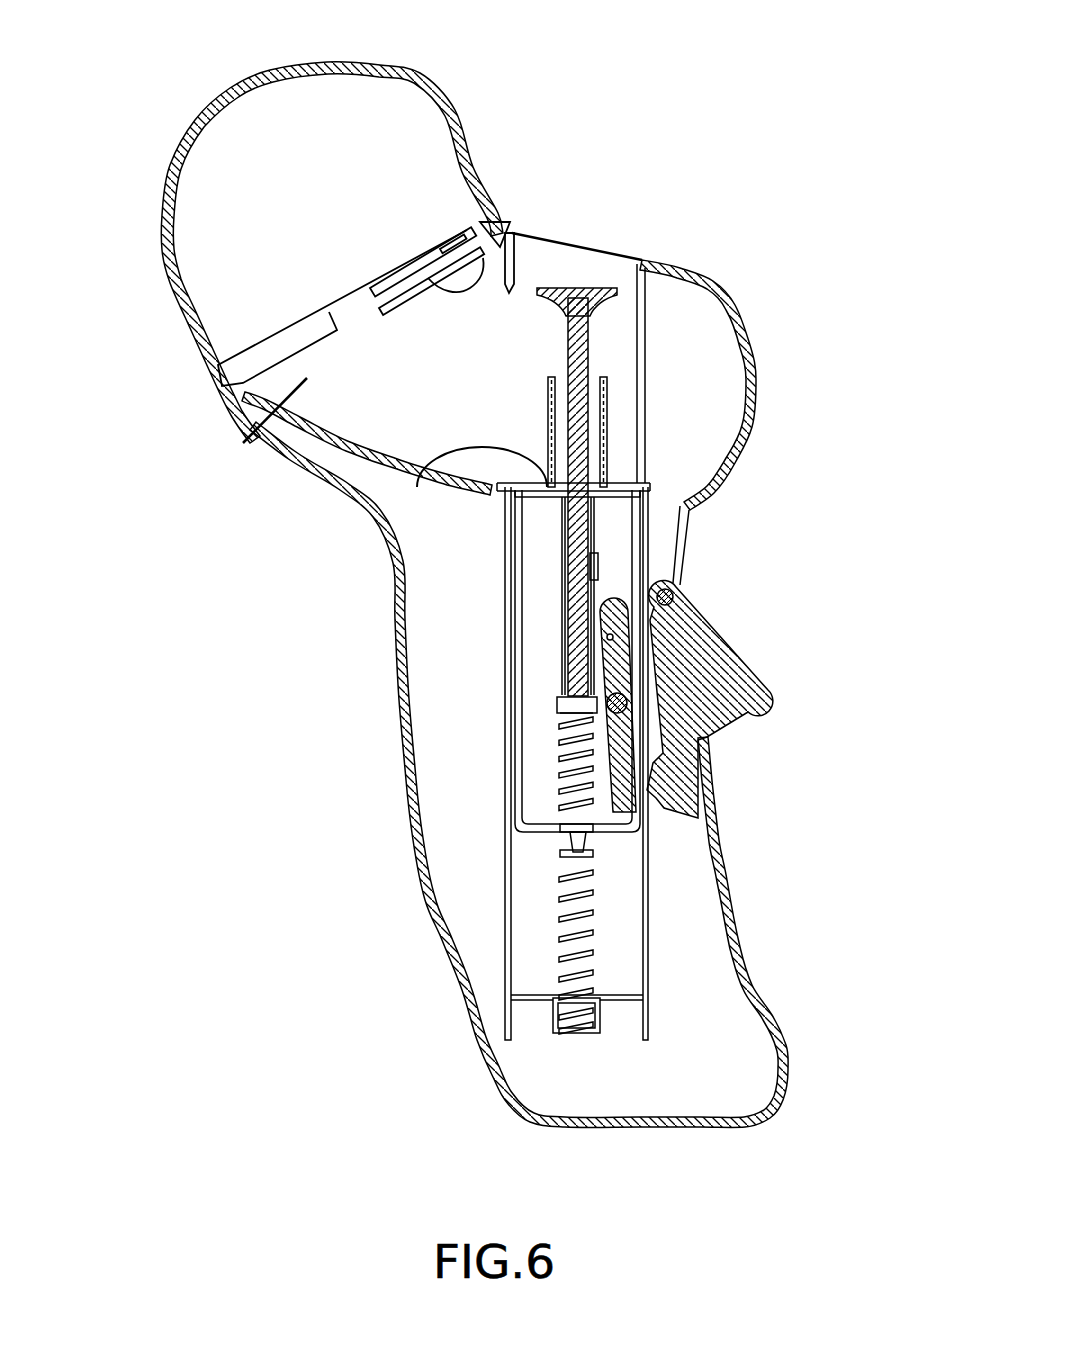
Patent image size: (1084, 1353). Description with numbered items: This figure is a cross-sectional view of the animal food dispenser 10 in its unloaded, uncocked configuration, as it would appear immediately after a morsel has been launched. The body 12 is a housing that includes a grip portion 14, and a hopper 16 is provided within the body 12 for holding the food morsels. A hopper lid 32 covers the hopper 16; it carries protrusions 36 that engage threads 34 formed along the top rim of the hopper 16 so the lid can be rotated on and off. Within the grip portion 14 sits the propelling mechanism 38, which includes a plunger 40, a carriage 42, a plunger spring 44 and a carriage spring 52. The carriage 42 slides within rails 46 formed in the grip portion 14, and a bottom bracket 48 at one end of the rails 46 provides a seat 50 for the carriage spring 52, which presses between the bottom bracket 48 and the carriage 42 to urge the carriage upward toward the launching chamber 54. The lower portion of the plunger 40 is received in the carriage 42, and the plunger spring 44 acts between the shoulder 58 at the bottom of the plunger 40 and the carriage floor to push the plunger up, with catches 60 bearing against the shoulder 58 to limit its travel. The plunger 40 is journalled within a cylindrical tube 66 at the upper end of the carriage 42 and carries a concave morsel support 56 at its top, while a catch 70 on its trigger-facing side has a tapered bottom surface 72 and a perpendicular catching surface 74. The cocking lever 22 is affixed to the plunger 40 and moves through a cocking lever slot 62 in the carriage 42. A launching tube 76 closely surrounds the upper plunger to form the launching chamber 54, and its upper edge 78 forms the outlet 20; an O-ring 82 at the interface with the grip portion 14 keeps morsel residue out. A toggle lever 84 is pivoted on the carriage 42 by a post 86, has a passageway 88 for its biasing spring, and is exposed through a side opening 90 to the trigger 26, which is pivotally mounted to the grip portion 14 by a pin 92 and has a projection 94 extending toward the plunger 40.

The animal food dispenser 10 is at (710, 137).
The body 12 is at (402, 720).
The grip portion 14 is at (724, 833).
The hopper 16 is at (250, 433).
The outlet 20 is at (630, 257).
The cocking lever 22 is at (588, 503).
The trigger 26 is at (752, 688).
The hopper lid 32 is at (326, 63).
The threads 34 is at (500, 237).
The protrusions 36 is at (463, 240).
The propelling mechanism 38 is at (470, 818).
The plunger 40 is at (590, 353).
The carriage 42 is at (537, 830).
The plunger spring 44 is at (560, 747).
The rails 46 is at (507, 930).
The bottom bracket 48 is at (553, 1017).
The seat 50 is at (583, 1033).
The carriage spring 52 is at (591, 950).
The launching chamber 54 is at (630, 337).
The morsel support 56 is at (682, 255).
The shoulder 58 is at (557, 713).
The catches 60 is at (557, 698).
The cocking lever slot 62 is at (598, 560).
The cylindrical tube 66 is at (604, 417).
The catch 70 is at (595, 505).
The tapered bottom surface 72 is at (600, 528).
The catching surface 74 is at (640, 483).
The launching tube 76 is at (648, 300).
The upper edge 78 is at (512, 228).
The O-ring 82 is at (417, 477).
The toggle lever 84 is at (622, 668).
The post 86 is at (623, 702).
The passageway 88 is at (612, 637).
The side opening 90 is at (683, 590).
The pin 92 is at (672, 595).
The projection 94 is at (663, 807).